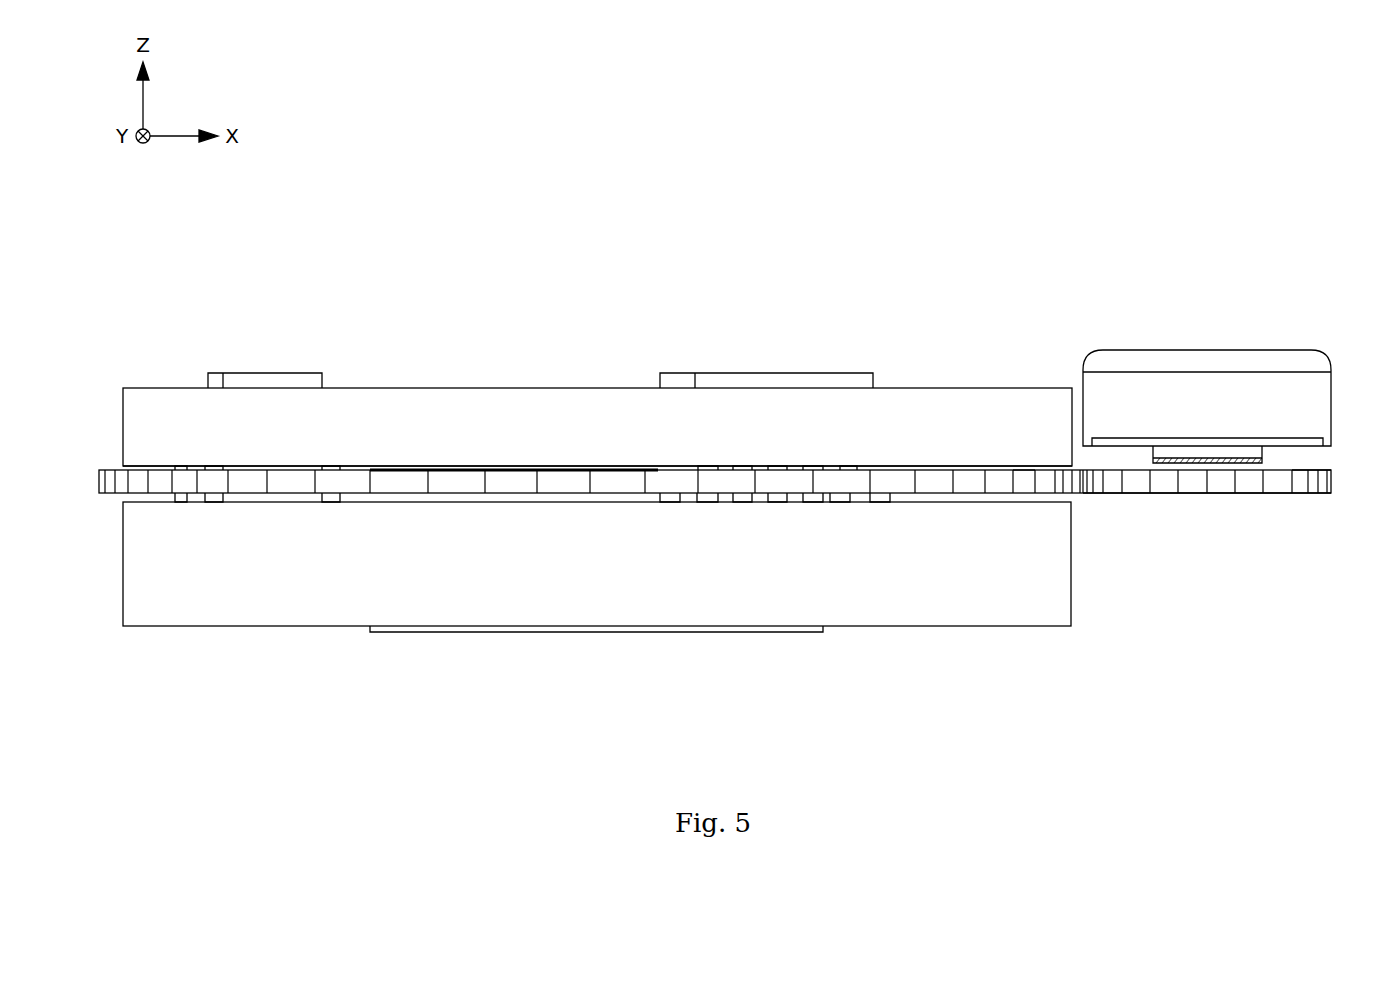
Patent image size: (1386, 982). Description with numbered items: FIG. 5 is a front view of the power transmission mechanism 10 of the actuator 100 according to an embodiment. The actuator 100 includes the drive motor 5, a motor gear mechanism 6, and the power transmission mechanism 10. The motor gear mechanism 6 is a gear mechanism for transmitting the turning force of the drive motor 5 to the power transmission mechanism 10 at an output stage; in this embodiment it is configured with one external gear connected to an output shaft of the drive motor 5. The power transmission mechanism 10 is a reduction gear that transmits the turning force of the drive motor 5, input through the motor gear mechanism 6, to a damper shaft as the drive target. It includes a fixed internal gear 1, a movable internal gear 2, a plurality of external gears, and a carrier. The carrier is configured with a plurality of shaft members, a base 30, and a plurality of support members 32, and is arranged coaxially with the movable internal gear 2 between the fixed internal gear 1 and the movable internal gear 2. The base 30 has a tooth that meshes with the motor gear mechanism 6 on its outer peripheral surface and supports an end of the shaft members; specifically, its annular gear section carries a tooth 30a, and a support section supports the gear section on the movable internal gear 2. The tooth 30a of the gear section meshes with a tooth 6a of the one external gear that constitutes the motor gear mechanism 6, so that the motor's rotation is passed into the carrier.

The actuator 100 is at (1302, 148).
The fixed internal gear 1 is at (906, 388).
The power transmission mechanism 10 is at (984, 372).
The support member 32 is at (273, 373).
The base 30 is at (101, 470).
The tooth 30a is at (1013, 482).
The movable internal gear 2 is at (940, 626).
The drive motor 5 is at (1224, 350).
The motor gear mechanism 6 is at (1250, 493).
The tooth 6a is at (1292, 483).